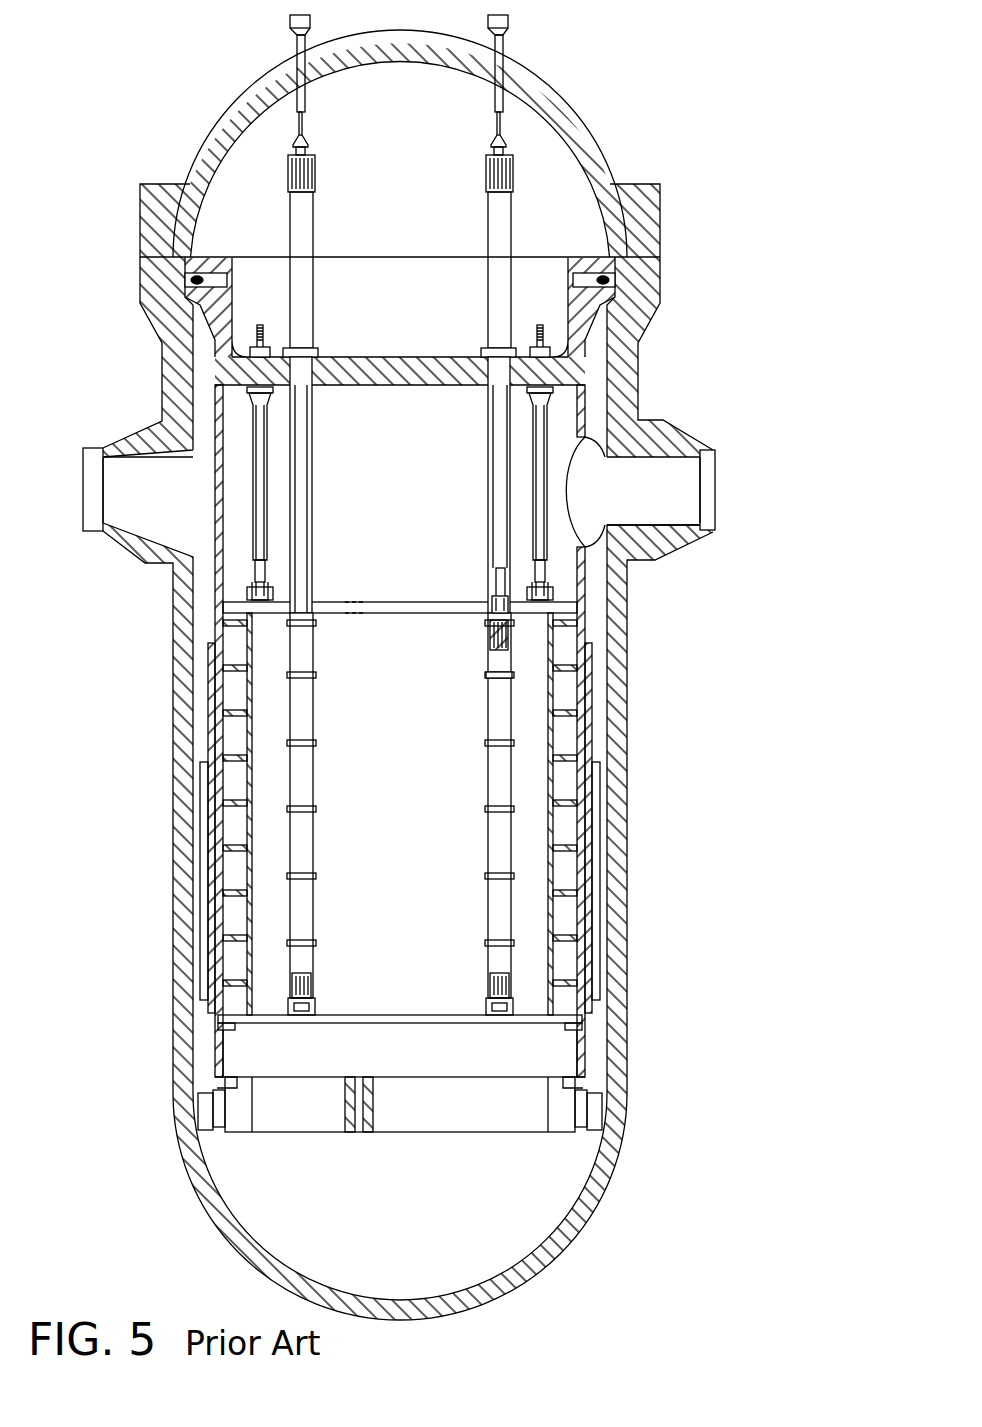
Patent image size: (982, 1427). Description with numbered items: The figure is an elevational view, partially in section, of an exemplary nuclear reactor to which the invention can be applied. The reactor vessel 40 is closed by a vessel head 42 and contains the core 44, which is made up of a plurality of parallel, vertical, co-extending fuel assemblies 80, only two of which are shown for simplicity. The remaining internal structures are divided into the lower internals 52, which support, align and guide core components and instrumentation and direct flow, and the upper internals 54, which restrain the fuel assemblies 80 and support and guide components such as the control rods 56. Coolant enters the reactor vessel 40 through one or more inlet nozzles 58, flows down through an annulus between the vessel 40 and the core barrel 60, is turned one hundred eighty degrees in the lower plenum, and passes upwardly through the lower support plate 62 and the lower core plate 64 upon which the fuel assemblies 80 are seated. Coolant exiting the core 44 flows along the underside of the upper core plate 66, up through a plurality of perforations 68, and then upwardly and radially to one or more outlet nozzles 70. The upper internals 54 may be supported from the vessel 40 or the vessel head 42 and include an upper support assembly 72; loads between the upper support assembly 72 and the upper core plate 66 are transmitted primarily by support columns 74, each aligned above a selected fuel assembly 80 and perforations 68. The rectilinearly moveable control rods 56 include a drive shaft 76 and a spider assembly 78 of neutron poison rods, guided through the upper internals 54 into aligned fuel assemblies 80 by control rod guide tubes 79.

The reactor vessel 40 is at (407, 788).
The vessel head 42 is at (660, 223).
The core 44 is at (421, 807).
The lower internals 52 is at (420, 1064).
The upper internals 54 is at (400, 462).
The control rods 56 is at (492, 613).
The inlet nozzles 58 is at (122, 432).
The core barrel 60 is at (188, 600).
The lower support plate 62 is at (442, 1118).
The lower core plate 64 is at (463, 1015).
The upper core plate 66 is at (423, 613).
The perforations 68 is at (357, 602).
The outlet nozzles 70 is at (683, 430).
The upper support assembly 72 is at (570, 257).
The support columns 74 is at (267, 485).
The drive shaft 76 is at (490, 568).
The spider assembly 78 is at (490, 602).
The control rod guide tubes 79 is at (490, 517).
The fuel assemblies 80 is at (308, 712).